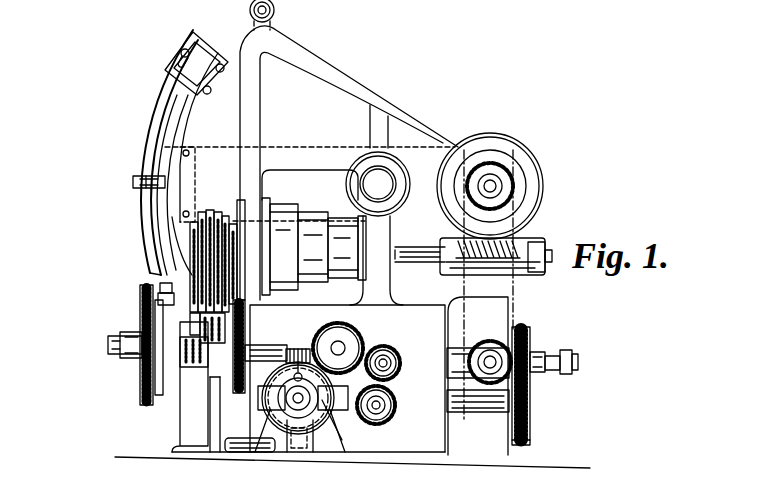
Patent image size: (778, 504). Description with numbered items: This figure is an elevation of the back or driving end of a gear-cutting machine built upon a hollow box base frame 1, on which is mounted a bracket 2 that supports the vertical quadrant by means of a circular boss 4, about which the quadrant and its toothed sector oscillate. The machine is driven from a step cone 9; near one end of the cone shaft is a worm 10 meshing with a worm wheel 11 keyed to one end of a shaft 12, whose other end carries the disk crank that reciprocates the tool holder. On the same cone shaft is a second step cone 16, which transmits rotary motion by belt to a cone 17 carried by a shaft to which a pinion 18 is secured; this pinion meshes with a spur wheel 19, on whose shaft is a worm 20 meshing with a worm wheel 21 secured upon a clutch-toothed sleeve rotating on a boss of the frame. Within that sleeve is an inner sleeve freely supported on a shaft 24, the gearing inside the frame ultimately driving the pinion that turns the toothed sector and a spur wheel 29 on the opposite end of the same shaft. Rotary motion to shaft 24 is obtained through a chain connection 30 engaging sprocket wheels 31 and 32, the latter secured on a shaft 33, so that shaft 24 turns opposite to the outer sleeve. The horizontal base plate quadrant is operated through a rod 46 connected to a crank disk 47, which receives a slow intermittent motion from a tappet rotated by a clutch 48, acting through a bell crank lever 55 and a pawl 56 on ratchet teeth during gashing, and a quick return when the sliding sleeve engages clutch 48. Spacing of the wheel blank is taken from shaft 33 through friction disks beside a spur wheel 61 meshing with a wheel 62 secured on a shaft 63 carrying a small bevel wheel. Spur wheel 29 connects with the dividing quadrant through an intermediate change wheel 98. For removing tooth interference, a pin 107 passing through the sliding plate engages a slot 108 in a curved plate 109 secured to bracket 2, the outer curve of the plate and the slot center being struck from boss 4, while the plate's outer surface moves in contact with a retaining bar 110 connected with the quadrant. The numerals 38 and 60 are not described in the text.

The box base frame 1 is at (352, 386).
The bracket 2 is at (311, 152).
The circular boss 4 is at (378, 184).
The step cone 9 is at (314, 246).
The worm 10 is at (468, 258).
The worm wheel 11 is at (543, 204).
The shaft 12 is at (500, 184).
The step cone 16 is at (218, 216).
The cone 17 is at (182, 318).
The pinion 18 is at (241, 297).
The spur wheel 19 is at (242, 368).
The worm 20 is at (296, 346).
The worm wheel 21 is at (322, 372).
The shaft 24 is at (272, 404).
The spur wheel 29 is at (348, 344).
The chain connection 30 is at (508, 292).
The sprocket wheel 31 is at (500, 183).
The sprocket wheel 32 is at (490, 342).
The shaft 33 is at (481, 386).
The bracket 38 is at (332, 412).
The rod 46 is at (215, 419).
The crank disk 47 is at (141, 396).
The clutch 48 is at (193, 370).
The bell crank lever 55 is at (160, 286).
The pawl 56 is at (158, 297).
The bar 60 is at (162, 396).
The spur wheel 61 is at (522, 332).
The wheel 62 is at (530, 431).
The shaft 63 is at (530, 406).
The change wheel 98 is at (382, 386).
The pin 107 is at (152, 178).
The slot 108 is at (157, 223).
The curved plate 109 is at (157, 114).
The retaining bar 110 is at (133, 182).